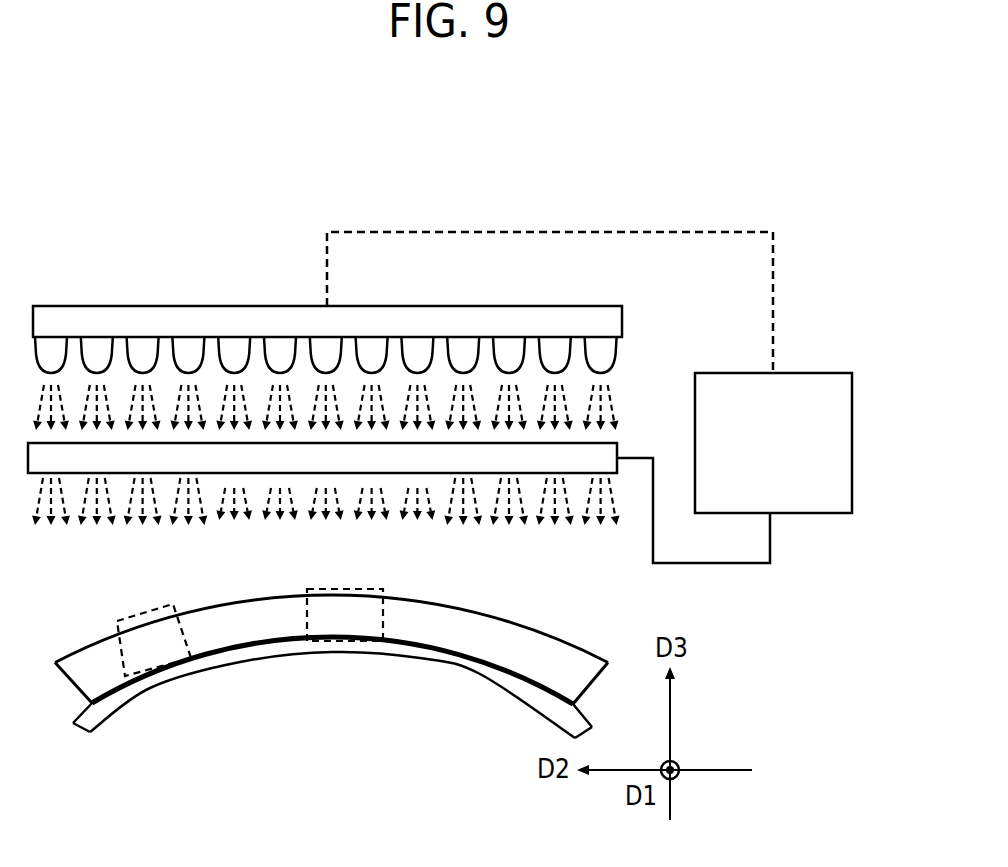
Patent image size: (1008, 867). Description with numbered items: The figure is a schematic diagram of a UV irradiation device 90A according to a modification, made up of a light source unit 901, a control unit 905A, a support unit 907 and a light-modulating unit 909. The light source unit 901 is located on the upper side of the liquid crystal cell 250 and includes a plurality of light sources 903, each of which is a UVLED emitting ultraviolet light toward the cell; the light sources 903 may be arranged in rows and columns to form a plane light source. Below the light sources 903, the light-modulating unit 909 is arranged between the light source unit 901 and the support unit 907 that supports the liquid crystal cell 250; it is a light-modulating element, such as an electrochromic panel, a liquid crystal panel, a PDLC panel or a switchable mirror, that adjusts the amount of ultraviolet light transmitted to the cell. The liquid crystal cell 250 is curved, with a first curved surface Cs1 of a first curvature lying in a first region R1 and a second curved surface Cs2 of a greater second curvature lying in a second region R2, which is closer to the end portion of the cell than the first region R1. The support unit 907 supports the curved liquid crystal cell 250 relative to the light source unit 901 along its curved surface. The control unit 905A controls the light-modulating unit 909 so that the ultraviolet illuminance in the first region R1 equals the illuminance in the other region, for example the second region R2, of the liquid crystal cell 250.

The UV irradiation device 90A is at (760, 198).
The light source unit 901 is at (147, 307).
The light sources 903 is at (618, 351).
The control unit 905A is at (807, 372).
The light-modulating unit 909 is at (618, 447).
The liquid crystal cell 250 is at (555, 632).
The support unit 907 is at (370, 654).
The first region R1 is at (307, 590).
The second region R2 is at (117, 622).
The first curved surface Cs1 is at (372, 595).
The second curved surface Cs2 is at (155, 612).